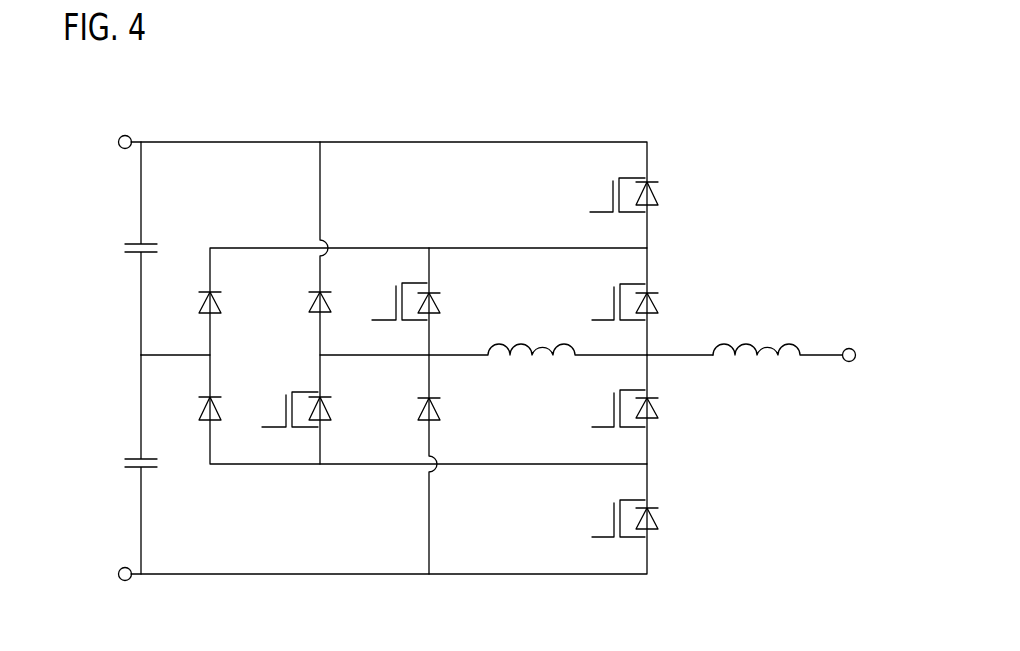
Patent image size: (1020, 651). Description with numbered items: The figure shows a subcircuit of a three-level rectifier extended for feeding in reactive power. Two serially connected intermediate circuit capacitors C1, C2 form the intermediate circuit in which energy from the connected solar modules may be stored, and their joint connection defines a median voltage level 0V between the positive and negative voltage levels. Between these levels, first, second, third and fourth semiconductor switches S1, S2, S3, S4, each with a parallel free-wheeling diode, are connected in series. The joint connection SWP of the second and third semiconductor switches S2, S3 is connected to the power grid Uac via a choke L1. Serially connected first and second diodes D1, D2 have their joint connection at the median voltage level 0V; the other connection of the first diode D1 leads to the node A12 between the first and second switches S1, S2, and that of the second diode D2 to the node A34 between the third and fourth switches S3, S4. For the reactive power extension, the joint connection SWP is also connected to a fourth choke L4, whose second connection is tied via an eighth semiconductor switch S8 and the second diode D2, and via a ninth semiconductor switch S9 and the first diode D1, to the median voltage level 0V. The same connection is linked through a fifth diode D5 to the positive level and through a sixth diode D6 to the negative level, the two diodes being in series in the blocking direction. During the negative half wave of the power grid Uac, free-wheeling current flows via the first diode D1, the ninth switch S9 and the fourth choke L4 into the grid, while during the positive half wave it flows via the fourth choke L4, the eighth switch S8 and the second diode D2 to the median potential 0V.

The median voltage level 0V is at (151, 336).
The intermediate circuit capacitor C1 is at (116, 248).
The intermediate circuit capacitor C2 is at (123, 464).
The first diode D1 is at (193, 303).
The second diode D2 is at (193, 408).
The fifth diode D5 is at (302, 303).
The sixth diode D6 is at (449, 414).
The first semiconductor switch S1 is at (620, 192).
The second semiconductor switch S2 is at (620, 299).
The third semiconductor switch S3 is at (620, 406).
The fourth semiconductor switch S4 is at (620, 518).
The eighth semiconductor switch S8 is at (291, 407).
The ninth semiconductor switch S9 is at (425, 301).
The fourth choke L4 is at (516, 370).
The choke L1 is at (777, 370).
The node between S1 and S2 A12 is at (647, 247).
The joint connection SWP is at (647, 356).
The node between S3 and S4 A34 is at (647, 464).
The power grid Uac is at (856, 374).